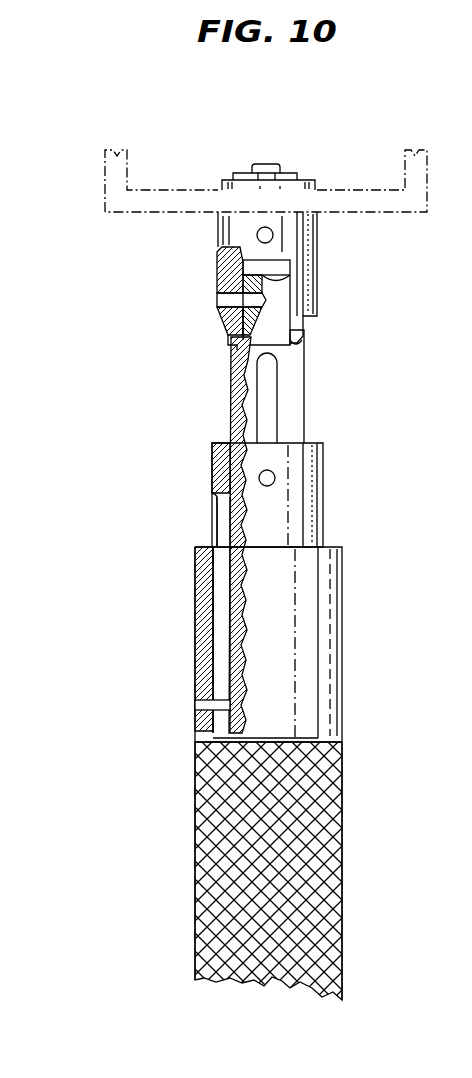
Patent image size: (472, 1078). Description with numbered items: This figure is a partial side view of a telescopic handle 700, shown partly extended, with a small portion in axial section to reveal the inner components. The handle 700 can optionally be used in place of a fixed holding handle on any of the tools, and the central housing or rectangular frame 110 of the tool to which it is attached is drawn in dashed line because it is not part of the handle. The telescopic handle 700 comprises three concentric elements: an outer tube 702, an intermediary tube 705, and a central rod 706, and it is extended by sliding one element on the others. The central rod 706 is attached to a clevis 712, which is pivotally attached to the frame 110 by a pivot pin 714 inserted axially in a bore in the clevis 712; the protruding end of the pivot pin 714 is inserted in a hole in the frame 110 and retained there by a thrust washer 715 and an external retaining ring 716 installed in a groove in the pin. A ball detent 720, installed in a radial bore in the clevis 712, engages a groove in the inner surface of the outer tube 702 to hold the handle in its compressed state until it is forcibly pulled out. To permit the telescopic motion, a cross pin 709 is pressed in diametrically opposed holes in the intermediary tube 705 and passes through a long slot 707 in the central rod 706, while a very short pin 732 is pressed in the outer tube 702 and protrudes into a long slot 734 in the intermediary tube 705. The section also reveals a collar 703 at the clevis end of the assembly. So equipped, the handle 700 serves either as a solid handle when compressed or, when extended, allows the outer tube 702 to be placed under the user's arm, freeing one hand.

The central housing 110 is at (150, 90).
The telescopic handle 700 is at (403, 96).
The outer tube 702 is at (334, 663).
The collar / retaining member 703 is at (220, 303).
The intermediary tube 705 is at (308, 518).
The central rod 706 is at (298, 375).
The long slot 707 is at (271, 367).
The cross pin 709 is at (275, 480).
The clevis 712 is at (317, 277).
The pivot pin 714 is at (266, 164).
The thrust washer 715 is at (303, 187).
The external retaining ring 716 is at (233, 176).
The ball detent 720 is at (273, 235).
The pin 732 is at (195, 705).
The long slot 734 is at (215, 524).